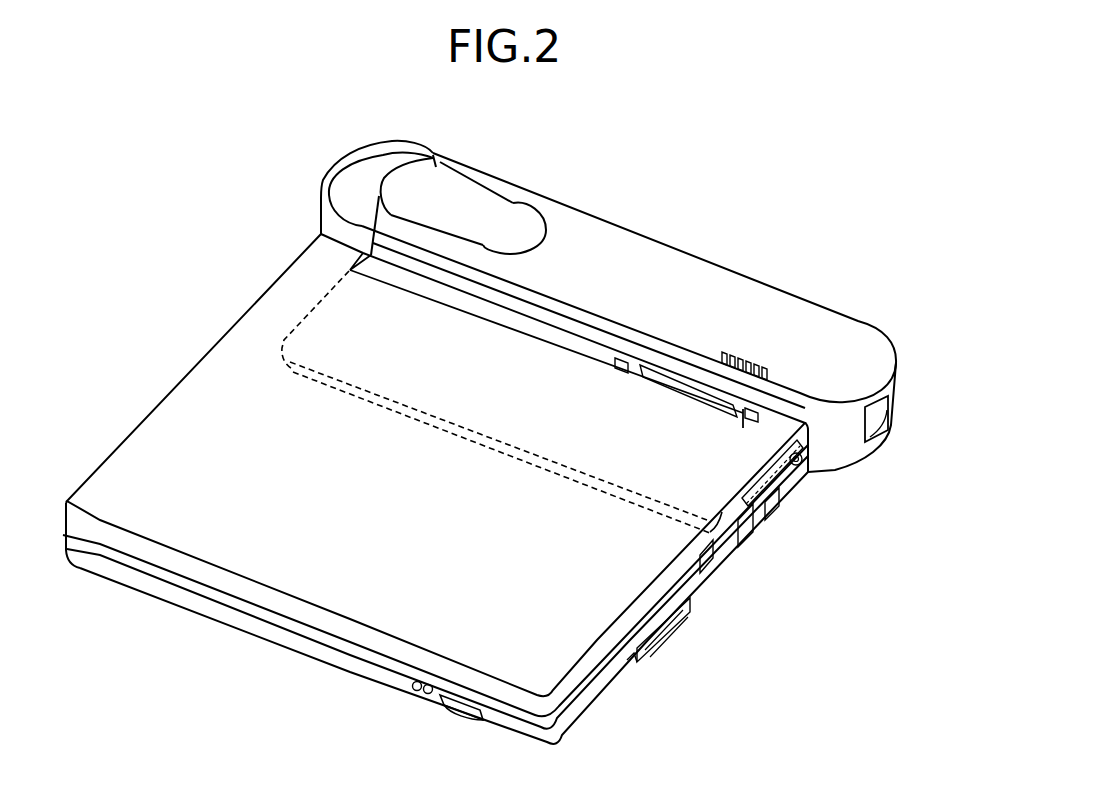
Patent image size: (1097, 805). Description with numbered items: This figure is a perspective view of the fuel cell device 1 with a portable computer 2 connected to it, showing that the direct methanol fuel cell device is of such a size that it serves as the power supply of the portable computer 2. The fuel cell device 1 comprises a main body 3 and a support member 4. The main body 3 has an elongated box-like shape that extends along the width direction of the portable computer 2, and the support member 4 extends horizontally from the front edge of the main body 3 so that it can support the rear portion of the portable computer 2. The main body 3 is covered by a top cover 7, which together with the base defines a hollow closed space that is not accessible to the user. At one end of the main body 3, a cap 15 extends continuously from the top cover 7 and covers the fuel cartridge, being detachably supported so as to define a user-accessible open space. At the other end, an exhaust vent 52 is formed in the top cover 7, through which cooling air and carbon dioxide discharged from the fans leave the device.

The fuel cell device 1 is at (746, 211).
The portable computer 2 is at (183, 351).
The main body 3 is at (818, 302).
The support member 4 is at (505, 418).
The top cover 7 is at (603, 238).
The cap 15 is at (348, 173).
The exhaust vent 52 is at (900, 404).